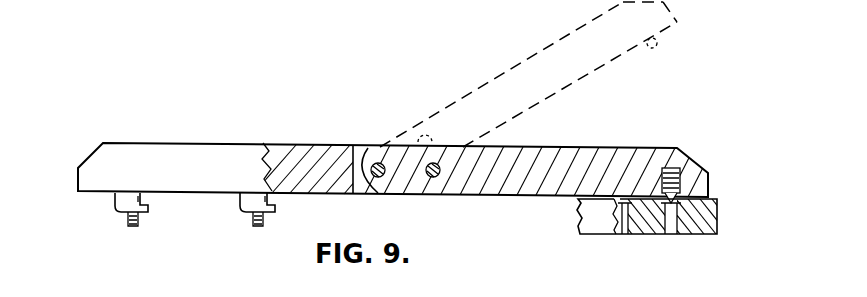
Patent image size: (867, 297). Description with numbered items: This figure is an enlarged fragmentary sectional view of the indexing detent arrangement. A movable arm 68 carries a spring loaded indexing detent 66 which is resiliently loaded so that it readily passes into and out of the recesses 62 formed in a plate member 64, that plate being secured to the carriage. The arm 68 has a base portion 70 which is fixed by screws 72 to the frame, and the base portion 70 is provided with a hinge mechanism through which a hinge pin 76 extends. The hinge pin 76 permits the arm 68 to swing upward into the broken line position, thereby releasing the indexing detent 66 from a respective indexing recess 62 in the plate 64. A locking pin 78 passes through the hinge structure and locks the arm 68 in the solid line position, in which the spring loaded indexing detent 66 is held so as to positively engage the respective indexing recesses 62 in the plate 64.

The recess 62 is at (710, 208).
The plate member 64 is at (703, 232).
The spring loaded indexing detent 66 is at (678, 195).
The movable arm 68 is at (524, 62).
The base portion 70 is at (198, 162).
The screws 72 is at (253, 226).
The hinge pin 76 is at (378, 163).
The locking pin 78 is at (440, 176).